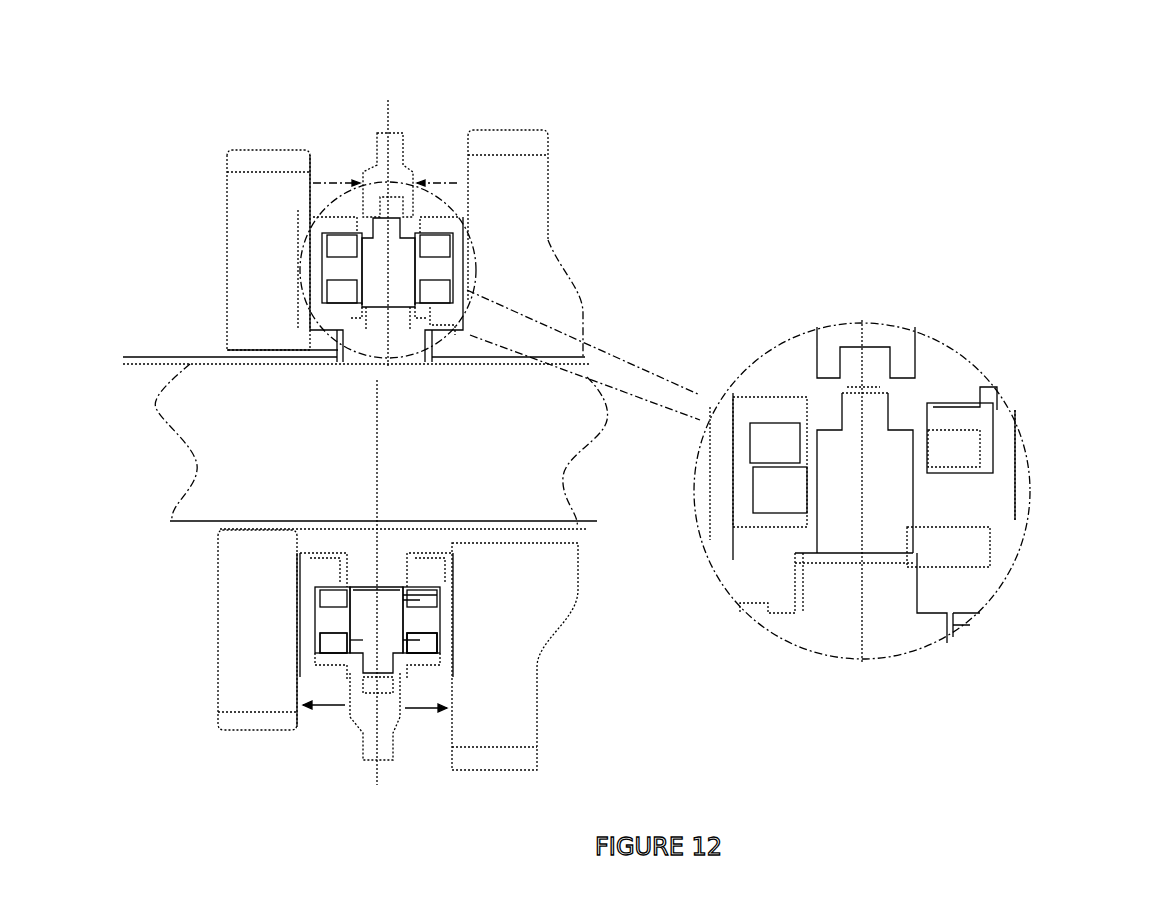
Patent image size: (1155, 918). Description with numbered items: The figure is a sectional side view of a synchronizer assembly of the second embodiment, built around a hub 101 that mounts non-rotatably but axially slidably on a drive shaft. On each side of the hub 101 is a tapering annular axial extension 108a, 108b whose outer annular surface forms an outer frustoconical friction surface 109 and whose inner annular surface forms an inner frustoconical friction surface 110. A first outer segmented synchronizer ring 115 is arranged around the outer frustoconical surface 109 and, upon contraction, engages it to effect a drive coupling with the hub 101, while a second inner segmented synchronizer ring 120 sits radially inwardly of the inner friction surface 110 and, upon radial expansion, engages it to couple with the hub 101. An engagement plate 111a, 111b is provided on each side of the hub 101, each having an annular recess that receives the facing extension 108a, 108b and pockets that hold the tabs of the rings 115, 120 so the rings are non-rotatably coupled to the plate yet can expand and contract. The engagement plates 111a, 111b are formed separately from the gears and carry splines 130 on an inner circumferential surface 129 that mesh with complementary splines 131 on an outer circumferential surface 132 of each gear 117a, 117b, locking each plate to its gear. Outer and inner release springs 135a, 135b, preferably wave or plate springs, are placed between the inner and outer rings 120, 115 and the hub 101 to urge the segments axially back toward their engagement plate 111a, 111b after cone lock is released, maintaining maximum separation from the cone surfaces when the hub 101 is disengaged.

The hub 101 is at (1000, 710).
The tapering annular axial extension 108a is at (333, 617).
The tapering annular axial extension 108b is at (417, 627).
The outer frustoconical friction surface 109 is at (348, 252).
The inner frustoconical friction surface 110 is at (327, 600).
The engagement plate 111a is at (313, 297).
The engagement plate 111b is at (455, 227).
The first outer segmented synchronizer ring 115 is at (427, 598).
The gear 117a is at (287, 214).
The gear 117b is at (503, 192).
The second inner segmented synchronizer ring 120 is at (430, 647).
The inner circumferential surface 129 is at (457, 333).
The splines 130 is at (323, 330).
The splines 131 is at (457, 555).
The outer circumferential surface 132 is at (443, 557).
The outer release spring 135a is at (350, 645).
The inner release spring 135b is at (413, 600).